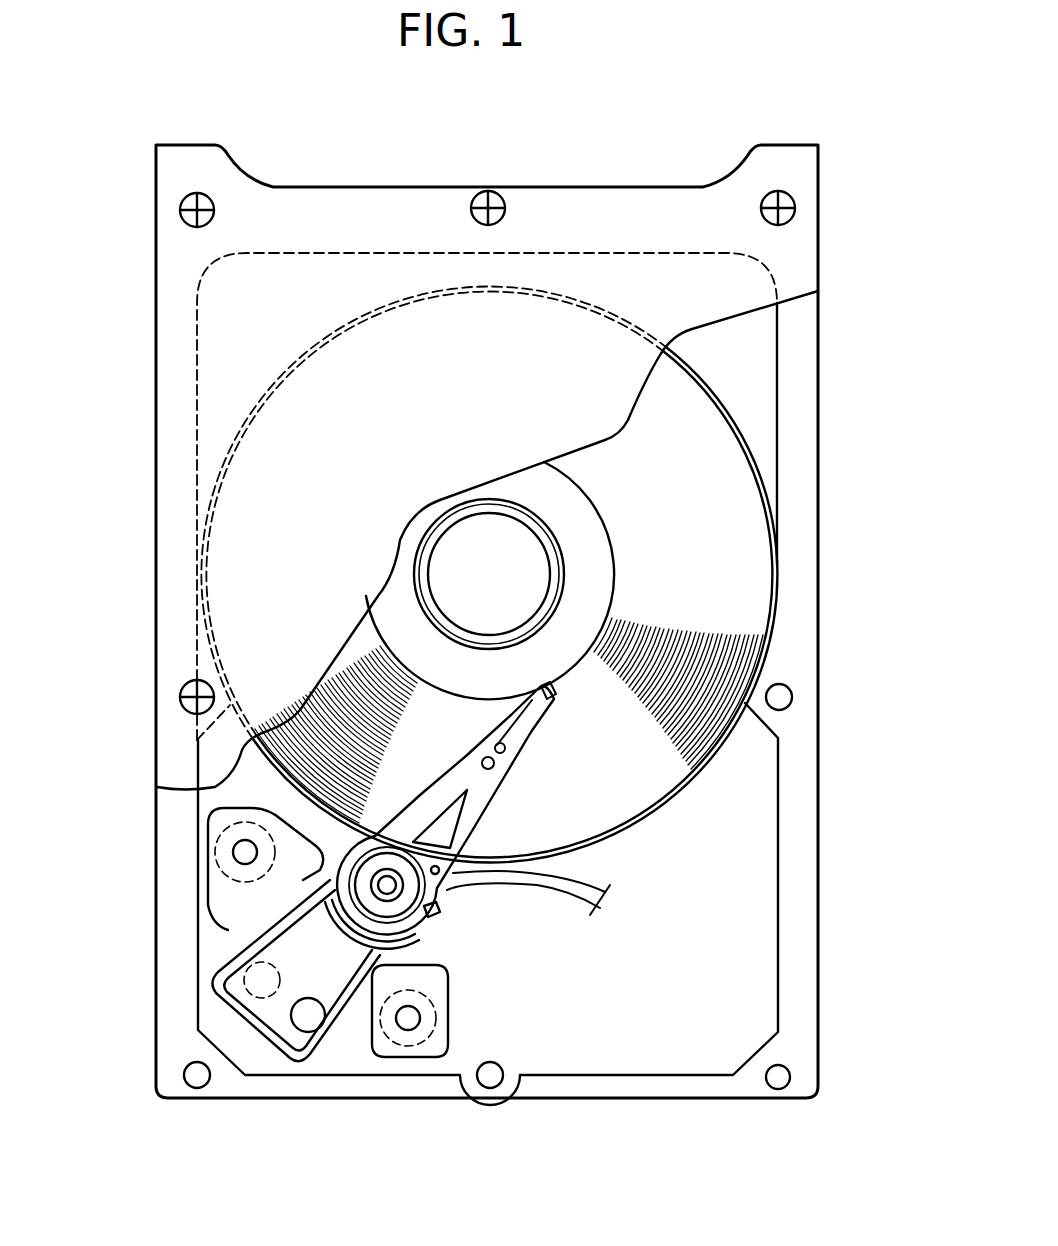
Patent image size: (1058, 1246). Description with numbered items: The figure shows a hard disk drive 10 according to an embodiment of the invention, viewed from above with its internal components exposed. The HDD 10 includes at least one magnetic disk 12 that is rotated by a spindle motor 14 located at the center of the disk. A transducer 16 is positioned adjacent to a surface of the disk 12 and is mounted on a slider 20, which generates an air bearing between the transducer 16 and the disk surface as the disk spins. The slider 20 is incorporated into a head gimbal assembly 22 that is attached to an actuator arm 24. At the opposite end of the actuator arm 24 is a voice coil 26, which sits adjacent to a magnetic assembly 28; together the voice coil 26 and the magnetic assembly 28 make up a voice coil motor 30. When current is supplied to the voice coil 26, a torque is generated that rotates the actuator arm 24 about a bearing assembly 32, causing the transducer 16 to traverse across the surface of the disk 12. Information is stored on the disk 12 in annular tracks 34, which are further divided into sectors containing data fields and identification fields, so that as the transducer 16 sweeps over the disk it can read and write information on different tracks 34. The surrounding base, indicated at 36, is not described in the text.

The hard disk drive 10 is at (818, 119).
The magnetic disk 12 is at (728, 507).
The spindle motor 14 is at (467, 548).
The transducer 16 is at (552, 698).
The slider 20 is at (522, 737).
The head gimbal assembly 22 is at (486, 817).
The actuator arm 24 is at (300, 900).
The voice coil 26 is at (218, 968).
The magnetic assembly 28 is at (245, 918).
The voice coil motor 30 is at (360, 1037).
The bearing assembly 32 is at (405, 895).
The annular tracks 34 is at (350, 688).
The base member 36 is at (792, 910).